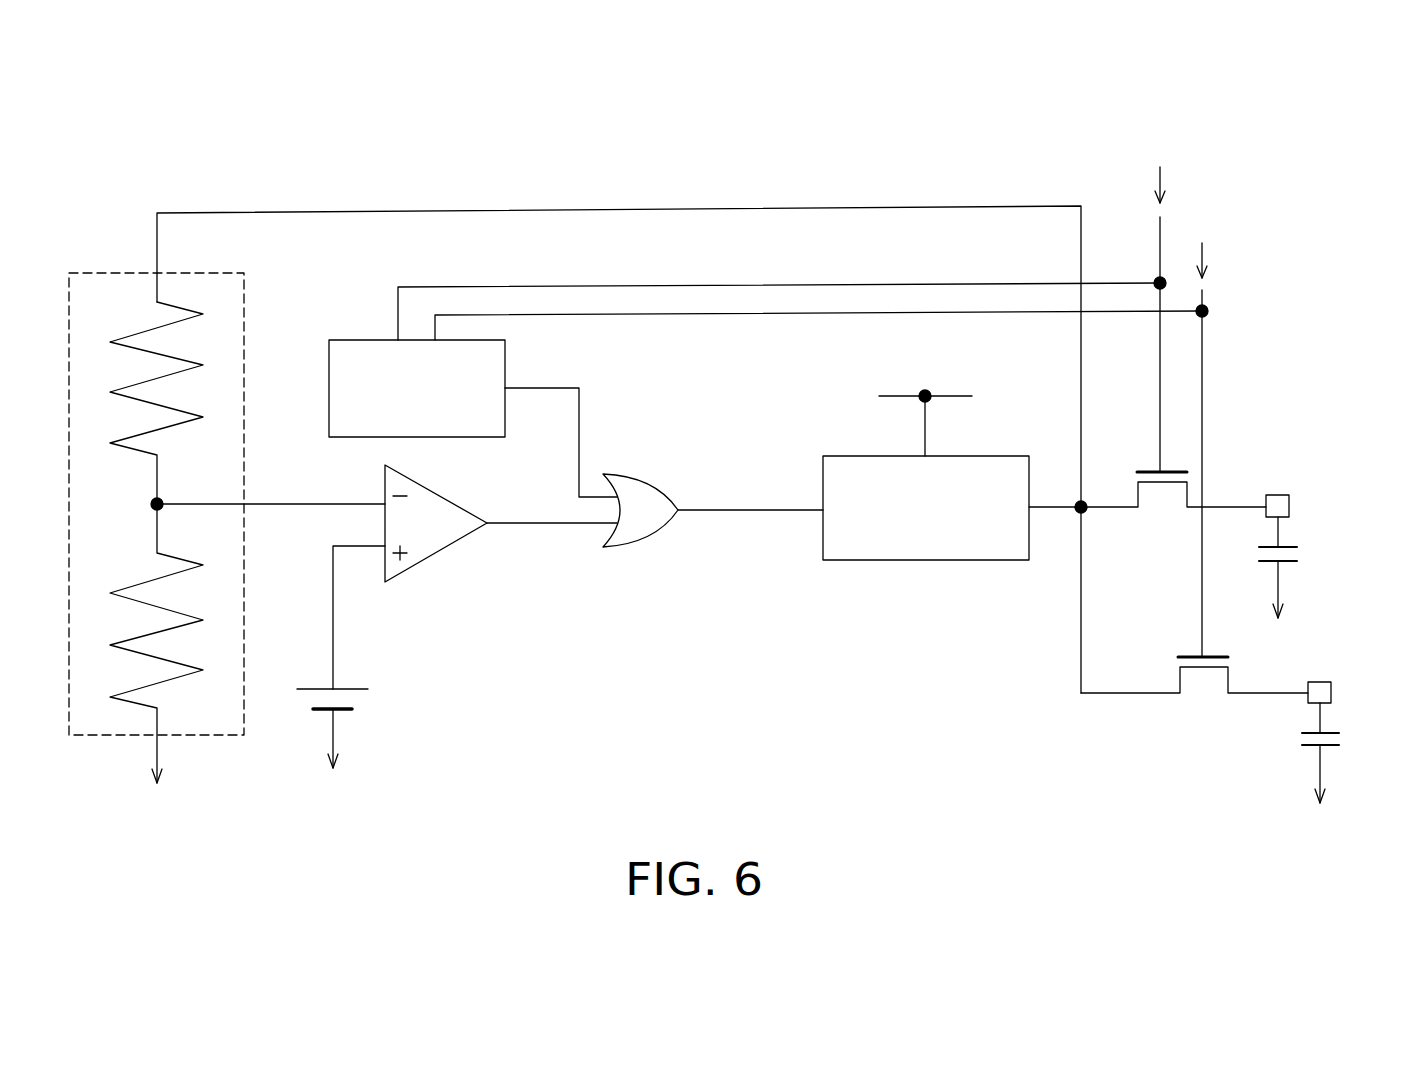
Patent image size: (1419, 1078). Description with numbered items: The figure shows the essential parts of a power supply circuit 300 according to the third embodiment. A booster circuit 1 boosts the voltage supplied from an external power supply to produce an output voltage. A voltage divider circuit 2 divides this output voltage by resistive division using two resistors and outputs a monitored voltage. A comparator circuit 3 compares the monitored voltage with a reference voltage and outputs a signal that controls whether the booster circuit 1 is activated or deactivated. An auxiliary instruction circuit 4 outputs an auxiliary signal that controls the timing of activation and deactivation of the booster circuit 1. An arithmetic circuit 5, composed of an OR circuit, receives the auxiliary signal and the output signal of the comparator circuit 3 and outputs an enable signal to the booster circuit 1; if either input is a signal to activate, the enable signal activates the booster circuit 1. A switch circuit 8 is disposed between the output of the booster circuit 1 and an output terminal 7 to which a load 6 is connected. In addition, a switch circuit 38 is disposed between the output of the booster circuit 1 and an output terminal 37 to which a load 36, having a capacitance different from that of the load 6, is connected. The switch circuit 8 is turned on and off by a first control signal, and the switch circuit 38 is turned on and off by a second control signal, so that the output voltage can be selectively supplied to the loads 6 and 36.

The booster circuit 1 is at (925, 561).
The voltage divider circuit 2 is at (114, 272).
The comparator circuit 3 is at (430, 557).
The auxiliary instruction circuit 4 is at (370, 340).
The arithmetic circuit 5 is at (633, 470).
The load 6 is at (1290, 545).
The output terminal 7 is at (1278, 494).
The switch circuit 8 is at (1137, 490).
The load 36 is at (1333, 731).
The output terminal 37 is at (1320, 681).
The switch circuit 38 is at (1178, 680).
The power supply circuit 300 is at (672, 767).